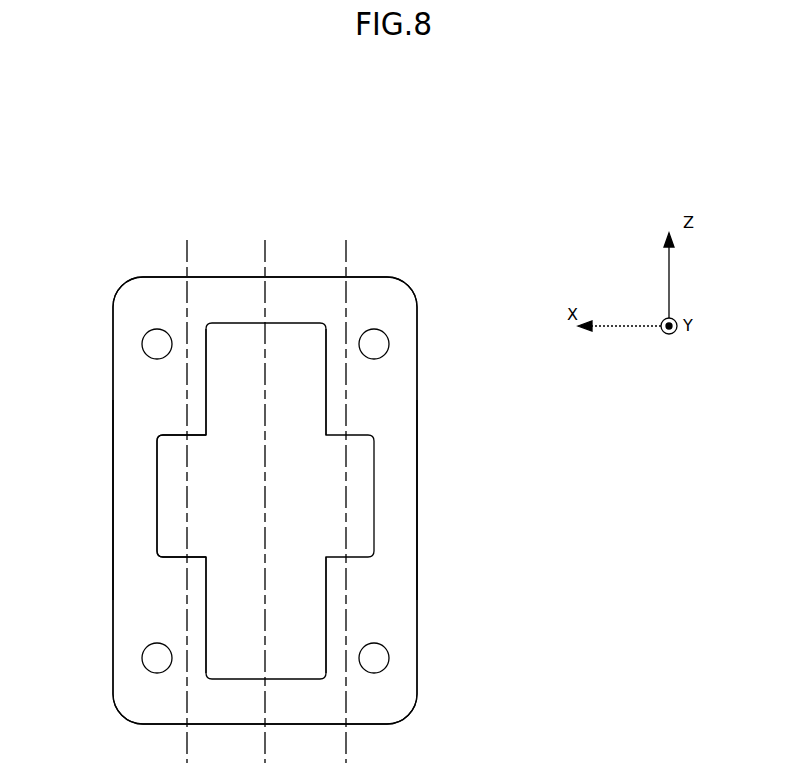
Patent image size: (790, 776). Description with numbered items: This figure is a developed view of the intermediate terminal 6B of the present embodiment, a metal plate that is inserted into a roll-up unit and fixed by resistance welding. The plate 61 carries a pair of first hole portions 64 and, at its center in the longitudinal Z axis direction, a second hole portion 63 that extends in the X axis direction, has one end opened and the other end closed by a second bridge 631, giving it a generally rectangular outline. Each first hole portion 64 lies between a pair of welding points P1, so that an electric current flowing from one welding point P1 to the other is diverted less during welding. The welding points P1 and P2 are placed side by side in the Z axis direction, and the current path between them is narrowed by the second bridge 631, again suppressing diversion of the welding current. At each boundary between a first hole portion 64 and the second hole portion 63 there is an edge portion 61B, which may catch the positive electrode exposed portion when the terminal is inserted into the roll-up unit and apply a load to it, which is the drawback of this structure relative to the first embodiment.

The intermediate terminal 6B is at (422, 225).
The base plate 61 is at (113, 313).
The second bridge 631 is at (128, 495).
The first hole portion 64 is at (206, 365).
The second hole portion 63 is at (193, 438).
The edge portion 61B is at (205, 556).
The welding point P1 is at (144, 351).
The welding point P2 is at (143, 655).